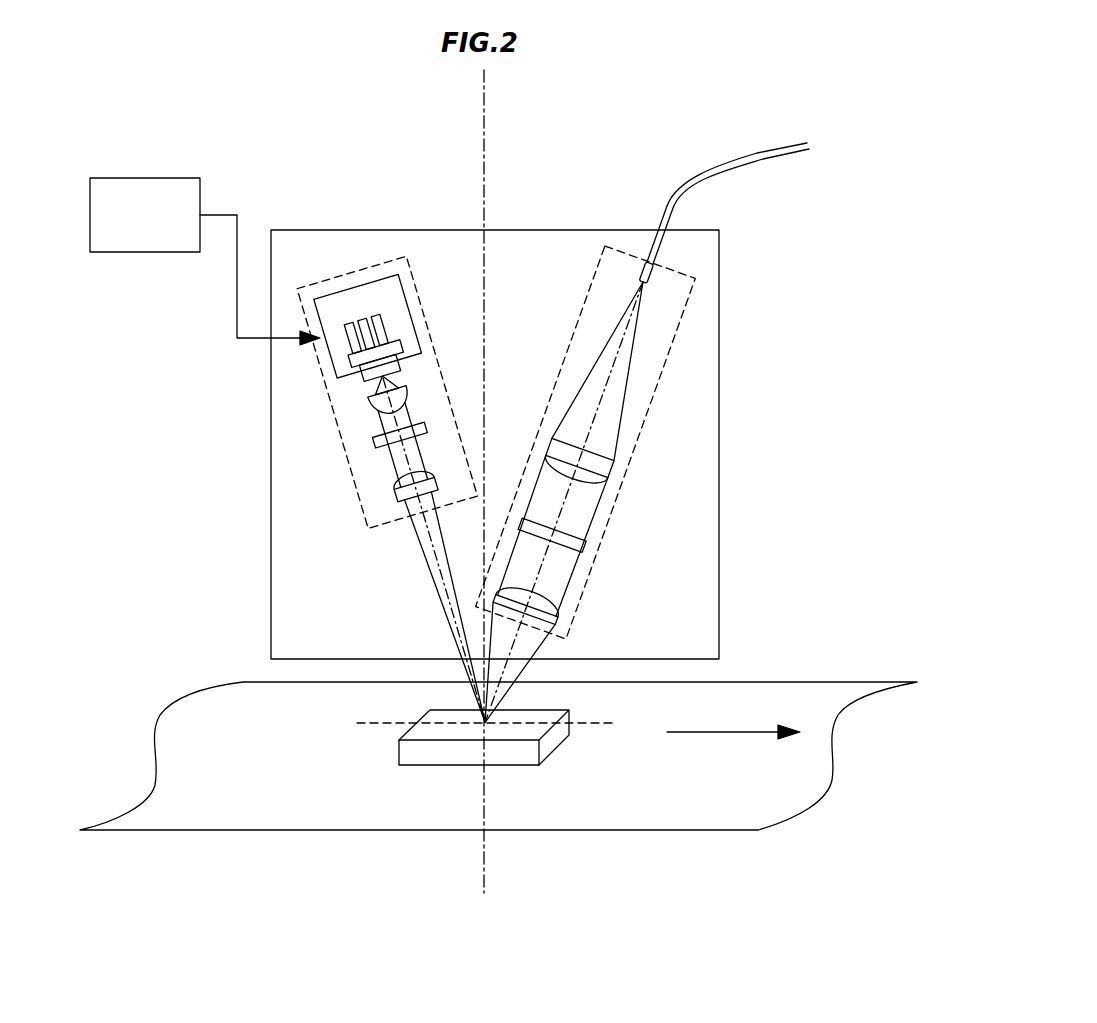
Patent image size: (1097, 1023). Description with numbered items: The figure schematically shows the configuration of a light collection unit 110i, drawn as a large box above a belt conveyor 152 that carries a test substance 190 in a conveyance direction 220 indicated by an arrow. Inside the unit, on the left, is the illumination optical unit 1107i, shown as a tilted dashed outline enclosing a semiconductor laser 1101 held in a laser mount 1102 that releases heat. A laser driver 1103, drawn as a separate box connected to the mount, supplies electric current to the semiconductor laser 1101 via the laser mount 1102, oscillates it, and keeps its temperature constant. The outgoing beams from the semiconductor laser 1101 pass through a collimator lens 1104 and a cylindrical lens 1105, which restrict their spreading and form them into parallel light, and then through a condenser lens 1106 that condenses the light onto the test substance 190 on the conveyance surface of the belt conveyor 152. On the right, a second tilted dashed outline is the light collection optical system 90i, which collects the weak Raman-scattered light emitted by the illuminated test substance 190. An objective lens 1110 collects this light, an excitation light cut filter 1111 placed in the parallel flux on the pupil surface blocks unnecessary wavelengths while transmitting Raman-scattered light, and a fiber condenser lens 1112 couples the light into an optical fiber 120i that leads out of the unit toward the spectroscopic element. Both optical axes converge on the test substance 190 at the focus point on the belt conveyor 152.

The light collection unit 110i is at (289, 229).
The laser driver 1103 is at (143, 252).
The illumination optical unit 1107i is at (414, 289).
The laser mount 1102 is at (356, 288).
The semiconductor laser 1101 is at (348, 384).
The collimator lens 1104 is at (377, 405).
The cylindrical lens 1105 is at (380, 443).
The condenser lens 1106 is at (397, 498).
The light collection optical system 90i is at (658, 385).
The optical fiber 120i is at (718, 162).
The fiber condenser lens 1112 is at (600, 450).
The excitation light cut filter 1111 is at (588, 517).
The objective lens 1110 is at (560, 598).
The test substance 190 is at (430, 766).
The belt conveyor 152 is at (601, 813).
The conveyance direction 220 is at (733, 746).